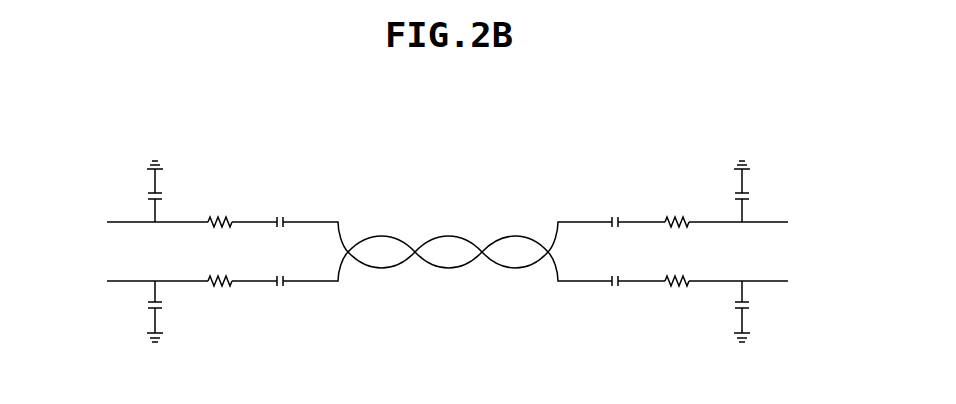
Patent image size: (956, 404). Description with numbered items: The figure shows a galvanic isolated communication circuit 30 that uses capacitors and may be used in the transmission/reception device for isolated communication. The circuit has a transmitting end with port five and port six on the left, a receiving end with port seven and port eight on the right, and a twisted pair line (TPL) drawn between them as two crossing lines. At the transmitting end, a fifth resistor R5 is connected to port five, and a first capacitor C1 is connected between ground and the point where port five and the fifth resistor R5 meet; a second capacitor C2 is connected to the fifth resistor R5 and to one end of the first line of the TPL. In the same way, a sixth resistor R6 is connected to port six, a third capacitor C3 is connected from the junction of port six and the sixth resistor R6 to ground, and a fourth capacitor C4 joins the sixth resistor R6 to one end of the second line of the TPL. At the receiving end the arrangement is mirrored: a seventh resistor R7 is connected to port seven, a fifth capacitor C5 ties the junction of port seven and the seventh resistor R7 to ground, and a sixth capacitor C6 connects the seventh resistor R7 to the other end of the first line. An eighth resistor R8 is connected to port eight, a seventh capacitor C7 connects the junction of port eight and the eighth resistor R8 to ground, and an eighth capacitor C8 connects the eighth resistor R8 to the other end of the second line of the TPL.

The galvanic isolated communication circuit 30 is at (110, 158).
The first capacitor C1 is at (155, 174).
The second capacitor C2 is at (280, 202).
The third capacitor C3 is at (155, 328).
The fourth capacitor C4 is at (280, 302).
The fifth capacitor C5 is at (742, 174).
The sixth capacitor C6 is at (615, 202).
The seventh capacitor C7 is at (742, 328).
The eighth capacitor C8 is at (615, 302).
The fifth resistor R5 is at (220, 202).
The sixth resistor R6 is at (220, 302).
The seventh resistor R7 is at (676, 202).
The eighth resistor R8 is at (676, 302).